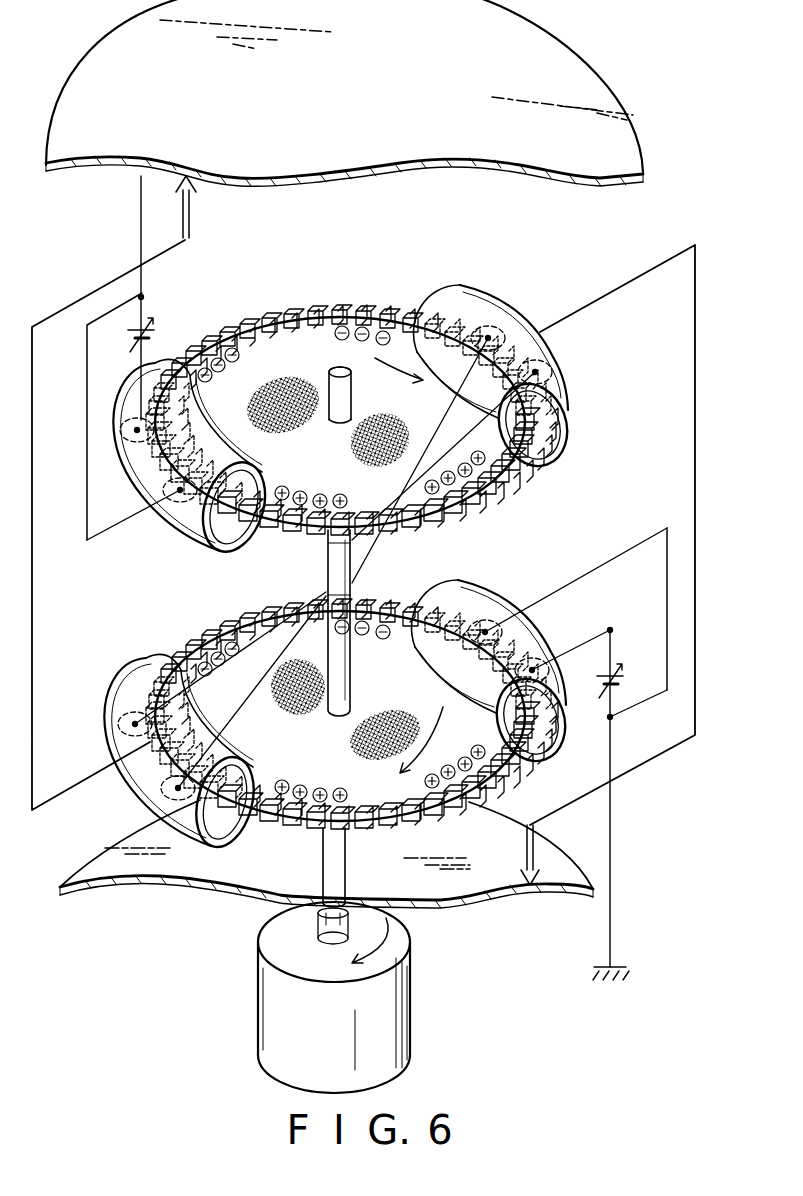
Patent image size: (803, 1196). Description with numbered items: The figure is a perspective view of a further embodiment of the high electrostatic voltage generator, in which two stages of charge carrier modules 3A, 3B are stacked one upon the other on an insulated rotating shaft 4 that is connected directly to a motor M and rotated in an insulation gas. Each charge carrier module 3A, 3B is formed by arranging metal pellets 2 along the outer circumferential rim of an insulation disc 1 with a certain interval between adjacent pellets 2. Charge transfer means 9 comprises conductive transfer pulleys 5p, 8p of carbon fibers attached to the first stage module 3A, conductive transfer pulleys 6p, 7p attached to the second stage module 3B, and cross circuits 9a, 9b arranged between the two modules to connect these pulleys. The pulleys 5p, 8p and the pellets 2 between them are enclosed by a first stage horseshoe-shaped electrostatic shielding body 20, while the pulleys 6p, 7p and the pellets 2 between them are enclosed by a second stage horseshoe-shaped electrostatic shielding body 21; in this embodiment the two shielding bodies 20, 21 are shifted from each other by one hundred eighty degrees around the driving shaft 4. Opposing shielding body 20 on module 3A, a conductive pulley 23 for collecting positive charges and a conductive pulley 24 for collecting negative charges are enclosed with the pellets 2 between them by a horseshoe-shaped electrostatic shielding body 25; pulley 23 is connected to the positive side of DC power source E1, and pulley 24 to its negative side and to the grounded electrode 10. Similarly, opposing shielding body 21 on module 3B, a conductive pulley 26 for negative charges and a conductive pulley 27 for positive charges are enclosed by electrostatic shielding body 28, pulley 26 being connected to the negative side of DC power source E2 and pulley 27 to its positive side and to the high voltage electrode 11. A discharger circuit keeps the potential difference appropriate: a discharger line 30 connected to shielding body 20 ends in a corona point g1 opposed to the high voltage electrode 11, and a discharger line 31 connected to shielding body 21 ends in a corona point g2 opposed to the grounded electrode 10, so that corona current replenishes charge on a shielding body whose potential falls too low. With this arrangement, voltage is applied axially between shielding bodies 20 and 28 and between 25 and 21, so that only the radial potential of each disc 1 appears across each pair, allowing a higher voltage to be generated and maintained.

The insulation disc 1 is at (277, 347).
The metal pellets 2 is at (353, 310).
The first stage charge carrier module 3A is at (341, 711).
The second stage charge carrier module 3B is at (341, 417).
The insulated rotating shaft 4 is at (340, 380).
The conductive transfer pulley 5p is at (160, 790).
The conductive transfer pulley 6p is at (552, 378).
The conductive transfer pulley 7p is at (481, 332).
The conductive transfer pulley 8p is at (118, 720).
The charge transfer means 9 is at (352, 590).
The cross circuit 9a is at (352, 547).
The cross circuit 9b is at (328, 582).
The grounded electrode 10 is at (453, 899).
The high voltage electrode 11 is at (547, 177).
The first stage electrostatic shielding body 20 is at (205, 838).
The second stage electrostatic shielding body 21 is at (566, 448).
The conductive pulley 23 is at (540, 664).
The conductive pulley 24 is at (489, 620).
The electrostatic shielding body 25 is at (535, 755).
The conductive pulley 26 is at (128, 470).
The conductive pulley 27 is at (175, 505).
The electrostatic shielding body 28 is at (196, 540).
The discharger line 30 is at (32, 605).
The discharger line 31 is at (695, 488).
The DC power source E1 is at (622, 804).
The DC power source E2 is at (155, 298).
The corona point g1 is at (190, 183).
The corona point g2 is at (527, 884).
The motor M is at (410, 1011).